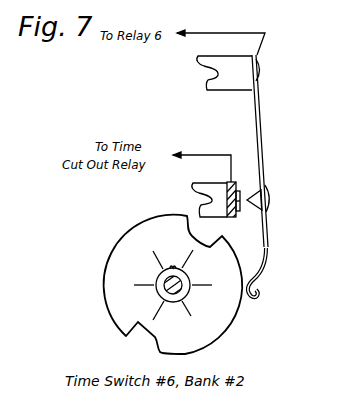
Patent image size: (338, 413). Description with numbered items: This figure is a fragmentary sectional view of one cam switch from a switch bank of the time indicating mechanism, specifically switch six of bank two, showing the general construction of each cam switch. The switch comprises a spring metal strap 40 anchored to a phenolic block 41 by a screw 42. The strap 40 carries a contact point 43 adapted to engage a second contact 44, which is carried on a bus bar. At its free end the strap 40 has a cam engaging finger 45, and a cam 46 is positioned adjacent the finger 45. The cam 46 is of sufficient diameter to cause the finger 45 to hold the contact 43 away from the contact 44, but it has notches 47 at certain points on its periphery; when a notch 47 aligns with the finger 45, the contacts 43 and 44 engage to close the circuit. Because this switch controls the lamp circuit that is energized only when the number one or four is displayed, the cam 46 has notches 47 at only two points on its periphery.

The spring metal strap 40 is at (258, 140).
The phenolic block 41 is at (242, 87).
The screw 42 is at (262, 70).
The contact point 43 is at (251, 198).
The second contact 44 is at (238, 187).
The cam engaging finger 45 is at (268, 268).
The cam 46 is at (228, 312).
The notches 47 is at (232, 230).